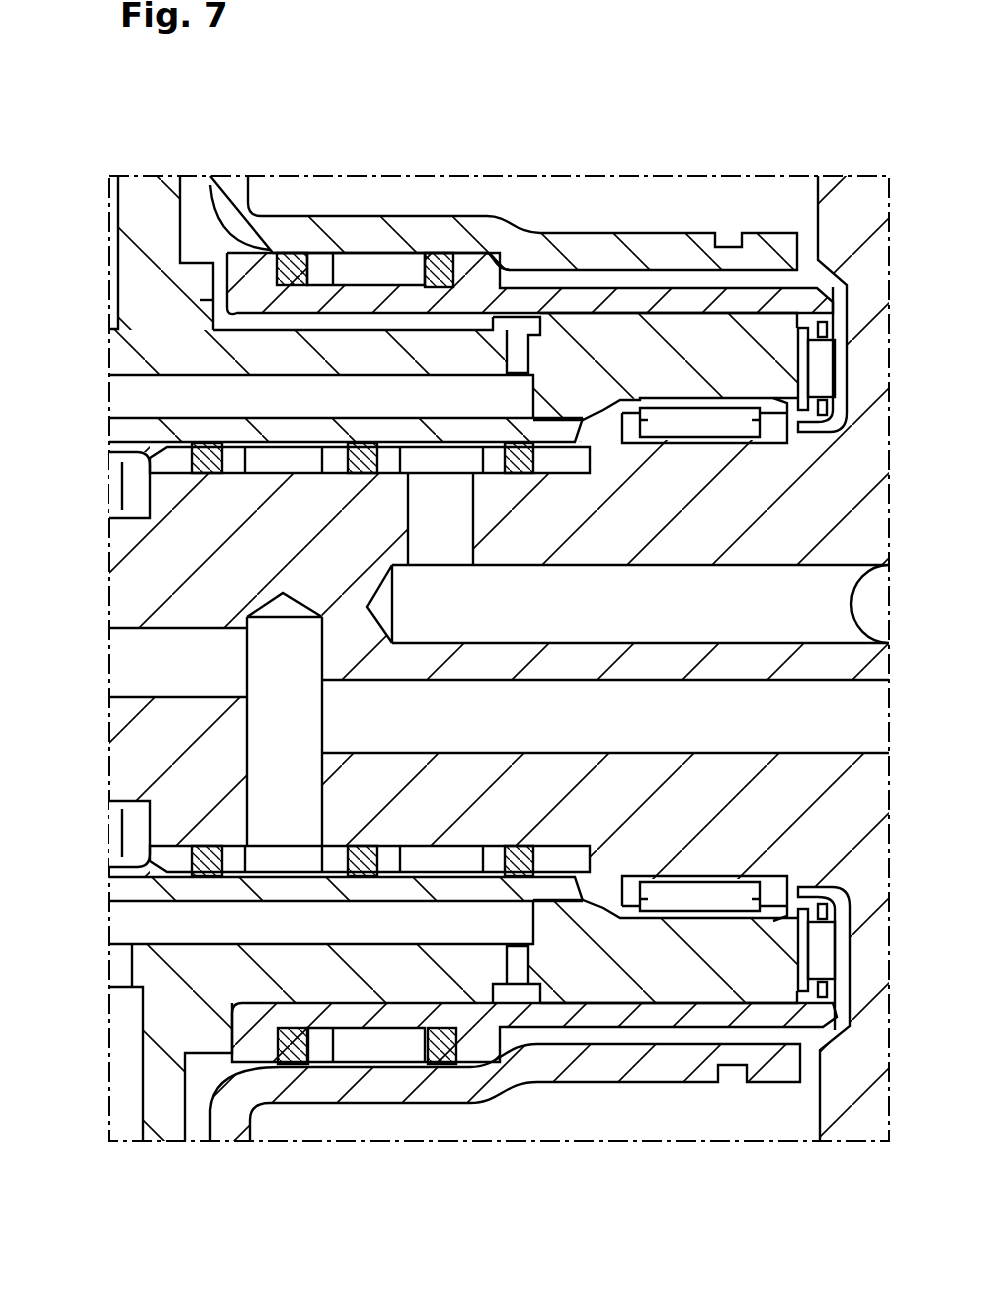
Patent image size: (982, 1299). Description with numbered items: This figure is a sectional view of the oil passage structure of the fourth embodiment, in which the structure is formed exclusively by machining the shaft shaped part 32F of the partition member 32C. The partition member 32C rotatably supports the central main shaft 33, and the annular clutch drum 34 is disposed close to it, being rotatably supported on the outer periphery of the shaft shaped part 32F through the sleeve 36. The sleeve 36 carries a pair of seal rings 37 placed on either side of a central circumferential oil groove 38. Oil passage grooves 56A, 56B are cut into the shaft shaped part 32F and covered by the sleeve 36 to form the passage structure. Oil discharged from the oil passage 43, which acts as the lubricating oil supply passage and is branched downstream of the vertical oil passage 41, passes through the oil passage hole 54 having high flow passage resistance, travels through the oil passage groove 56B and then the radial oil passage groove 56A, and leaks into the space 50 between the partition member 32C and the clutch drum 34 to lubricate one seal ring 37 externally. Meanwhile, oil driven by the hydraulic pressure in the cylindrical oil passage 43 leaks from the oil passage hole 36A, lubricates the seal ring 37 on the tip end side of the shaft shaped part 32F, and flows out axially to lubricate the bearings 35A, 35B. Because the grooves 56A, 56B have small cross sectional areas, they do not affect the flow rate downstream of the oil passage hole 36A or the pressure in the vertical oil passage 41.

The partition member 32C is at (138, 190).
The space 50 is at (197, 250).
The clutch drum 34 is at (283, 252).
The seal ring 37 is at (293, 265).
The central circumferential oil groove 38 is at (443, 275).
The sleeve 36 is at (693, 420).
The oil passage hole 36A is at (510, 270).
The oil passage hole 54 is at (515, 355).
The oil passage groove 56A is at (200, 300).
The oil passage groove 56B is at (362, 330).
The oil passage 43 is at (118, 400).
The bearing 35A is at (757, 345).
The bearing 35B is at (823, 370).
The shaft shaped part 32F is at (780, 350).
The main shaft 33 is at (118, 582).
The vertical oil passage 41 is at (118, 1022).